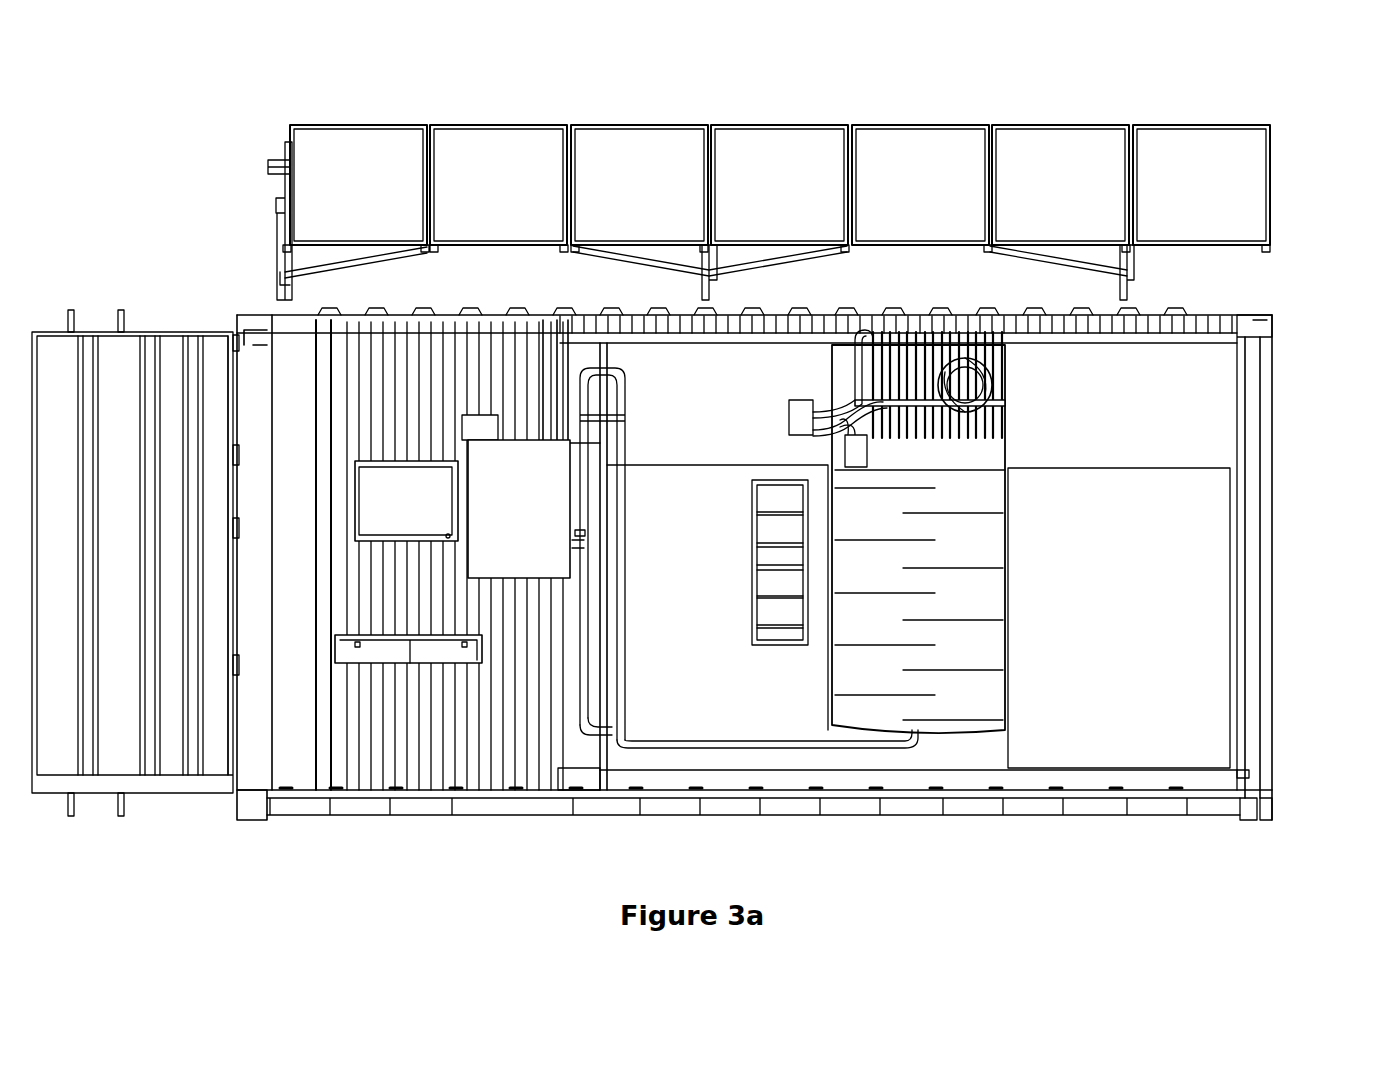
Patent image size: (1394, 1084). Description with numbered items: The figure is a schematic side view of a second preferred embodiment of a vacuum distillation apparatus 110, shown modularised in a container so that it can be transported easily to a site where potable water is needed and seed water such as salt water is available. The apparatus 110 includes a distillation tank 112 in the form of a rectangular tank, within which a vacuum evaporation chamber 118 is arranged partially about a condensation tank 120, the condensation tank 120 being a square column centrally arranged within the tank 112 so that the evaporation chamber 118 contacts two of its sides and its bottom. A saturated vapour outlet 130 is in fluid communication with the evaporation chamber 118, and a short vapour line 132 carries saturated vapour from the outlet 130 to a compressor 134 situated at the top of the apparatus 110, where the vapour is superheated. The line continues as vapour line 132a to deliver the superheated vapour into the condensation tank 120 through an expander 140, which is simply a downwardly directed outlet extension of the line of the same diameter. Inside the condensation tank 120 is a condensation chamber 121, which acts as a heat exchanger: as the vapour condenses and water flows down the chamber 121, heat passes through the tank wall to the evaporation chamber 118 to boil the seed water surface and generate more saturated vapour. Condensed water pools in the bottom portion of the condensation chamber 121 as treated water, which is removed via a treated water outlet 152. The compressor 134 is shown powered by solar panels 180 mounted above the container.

The vacuum distillation apparatus 110 is at (1252, 378).
The distillation tank 112 is at (1224, 449).
The vacuum evaporation chamber 118 is at (1162, 447).
The condensation tank 120 is at (1007, 697).
The condensation chamber 121 is at (993, 547).
The saturated vapour outlet 130 is at (797, 417).
The vapour line 132 is at (823, 400).
The vapour line 132a is at (865, 430).
The compressor 134 is at (1000, 384).
The expander 140 is at (858, 463).
The treated water outlet 152 is at (767, 743).
The solar panels 180 is at (1173, 165).